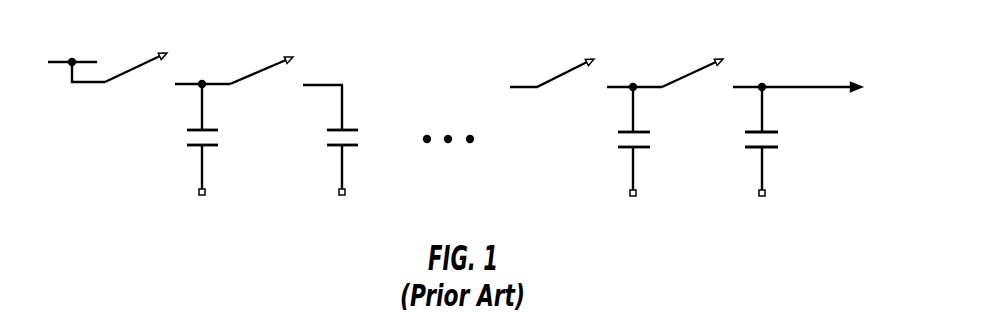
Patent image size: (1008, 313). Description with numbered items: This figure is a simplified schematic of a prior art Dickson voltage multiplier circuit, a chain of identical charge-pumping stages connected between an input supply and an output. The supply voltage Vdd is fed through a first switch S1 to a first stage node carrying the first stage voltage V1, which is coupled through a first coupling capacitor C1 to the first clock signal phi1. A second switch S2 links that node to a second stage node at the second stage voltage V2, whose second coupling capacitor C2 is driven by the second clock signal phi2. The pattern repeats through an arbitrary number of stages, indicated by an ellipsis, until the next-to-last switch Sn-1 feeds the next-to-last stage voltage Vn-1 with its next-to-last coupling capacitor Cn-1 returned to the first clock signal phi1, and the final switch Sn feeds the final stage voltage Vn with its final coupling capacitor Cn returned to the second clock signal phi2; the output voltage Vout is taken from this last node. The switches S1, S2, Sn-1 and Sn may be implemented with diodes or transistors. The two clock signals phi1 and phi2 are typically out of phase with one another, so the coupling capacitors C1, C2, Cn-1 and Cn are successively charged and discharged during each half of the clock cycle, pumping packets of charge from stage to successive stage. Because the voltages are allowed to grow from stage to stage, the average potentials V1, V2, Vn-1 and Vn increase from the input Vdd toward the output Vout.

The supply voltage Vdd is at (76, 50).
The first switch S1 is at (156, 34).
The first stage voltage V1 is at (202, 59).
The first coupling capacitor C1 is at (181, 136).
The first clock signal phi1 is at (202, 208).
The second switch S2 is at (284, 33).
The second stage voltage V2 is at (326, 58).
The second coupling capacitor C2 is at (320, 137).
The second clock signal phi2 is at (342, 208).
The (n-1)th switch Sn-1 is at (567, 52).
The (n-1)th stage voltage Vn-1 is at (637, 61).
The (n-1)th coupling capacitor Cn-1 is at (598, 138).
The nth switch Sn is at (715, 36).
The nth stage voltage Vn is at (792, 61).
The nth coupling capacitor Cn is at (739, 138).
The output voltage Vout is at (884, 89).